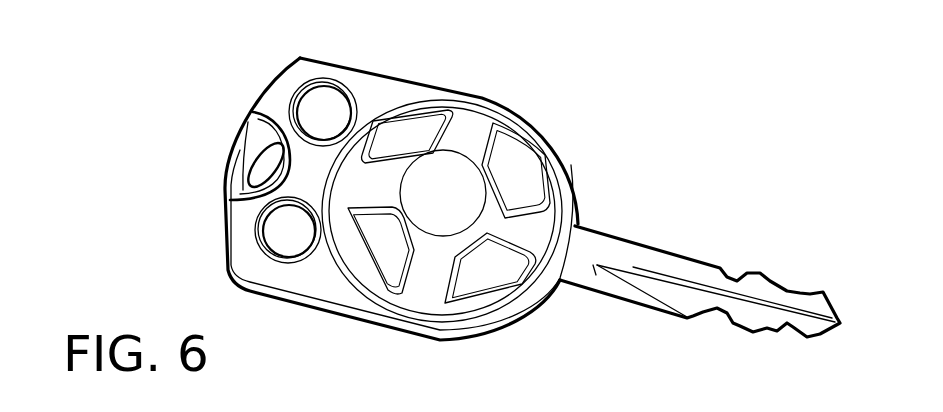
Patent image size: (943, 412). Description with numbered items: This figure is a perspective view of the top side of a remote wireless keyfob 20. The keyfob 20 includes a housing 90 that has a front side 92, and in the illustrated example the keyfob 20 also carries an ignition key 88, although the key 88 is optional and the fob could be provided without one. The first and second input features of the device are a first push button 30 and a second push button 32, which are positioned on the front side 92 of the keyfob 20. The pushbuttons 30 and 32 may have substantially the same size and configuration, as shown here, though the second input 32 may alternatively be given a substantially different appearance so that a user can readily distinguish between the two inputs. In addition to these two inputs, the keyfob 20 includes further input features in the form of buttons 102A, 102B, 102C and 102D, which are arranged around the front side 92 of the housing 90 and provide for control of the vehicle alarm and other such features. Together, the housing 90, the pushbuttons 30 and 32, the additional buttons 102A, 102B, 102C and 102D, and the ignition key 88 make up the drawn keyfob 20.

The keyfob 20 is at (473, 92).
The first push button 30 is at (323, 113).
The second push button 32 is at (275, 234).
The ignition key 88 is at (668, 252).
The housing 90 is at (564, 180).
The front side 92 is at (312, 282).
The button 102A is at (417, 142).
The button 102B is at (524, 166).
The button 102C is at (483, 282).
The button 102D is at (382, 260).